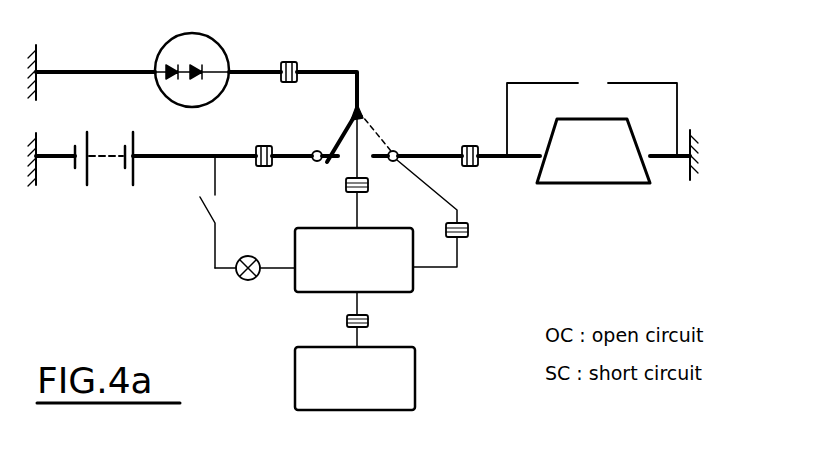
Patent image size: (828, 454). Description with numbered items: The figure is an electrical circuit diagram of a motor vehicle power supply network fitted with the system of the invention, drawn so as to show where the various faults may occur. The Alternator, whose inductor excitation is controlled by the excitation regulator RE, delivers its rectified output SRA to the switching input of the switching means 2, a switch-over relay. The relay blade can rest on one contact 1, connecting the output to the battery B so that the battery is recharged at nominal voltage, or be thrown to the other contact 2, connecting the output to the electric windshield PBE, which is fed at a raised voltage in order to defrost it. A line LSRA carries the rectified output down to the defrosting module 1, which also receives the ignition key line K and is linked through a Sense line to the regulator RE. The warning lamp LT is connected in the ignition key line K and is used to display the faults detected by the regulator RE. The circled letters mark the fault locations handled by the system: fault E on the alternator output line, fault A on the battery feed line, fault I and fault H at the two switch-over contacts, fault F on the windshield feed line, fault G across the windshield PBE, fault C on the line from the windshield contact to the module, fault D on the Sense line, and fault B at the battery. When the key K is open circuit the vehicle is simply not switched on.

The defrosting module 1 is at (337, 143).
The switching means 2 is at (379, 147).
The fault A is at (263, 137).
The battery B is at (82, 178).
The fault C is at (450, 213).
The fault D is at (380, 319).
The fault E is at (304, 57).
The fault F is at (473, 136).
The fault G is at (592, 112).
The fault H is at (373, 128).
The fault I is at (317, 118).
The ignition key line K is at (207, 224).
The warning lamp LT is at (244, 280).
The rectified output from the alternator SRA is at (249, 68).
The switched rectified alternator line LSRA is at (356, 213).
The electric windshield PBE is at (593, 151).
The excitation regulator RE is at (355, 378).
The sense line Sense is at (306, 334).
The alternator Alternator is at (156, 56).